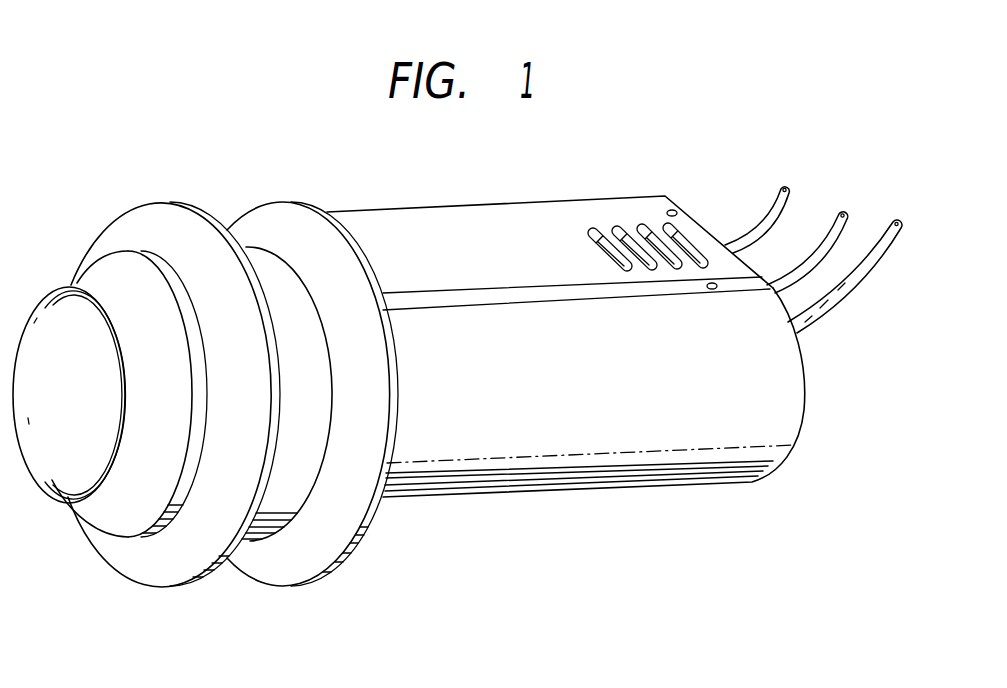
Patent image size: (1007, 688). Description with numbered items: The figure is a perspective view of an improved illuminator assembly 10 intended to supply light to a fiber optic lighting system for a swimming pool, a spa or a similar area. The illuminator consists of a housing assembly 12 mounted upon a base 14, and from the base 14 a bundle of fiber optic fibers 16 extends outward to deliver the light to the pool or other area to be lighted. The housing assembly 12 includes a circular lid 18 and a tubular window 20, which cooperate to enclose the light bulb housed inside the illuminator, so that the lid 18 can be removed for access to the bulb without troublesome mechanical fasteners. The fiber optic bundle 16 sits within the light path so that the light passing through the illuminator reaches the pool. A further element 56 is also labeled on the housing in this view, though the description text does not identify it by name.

The illuminator assembly 10 is at (572, 116).
The housing assembly 12 is at (303, 132).
The base 14 is at (435, 208).
The bundle of fiber optic fibers 16 is at (763, 207).
The circular lid 18 is at (72, 281).
The tubular window 20 is at (283, 492).
The retaining ring 56 is at (292, 198).